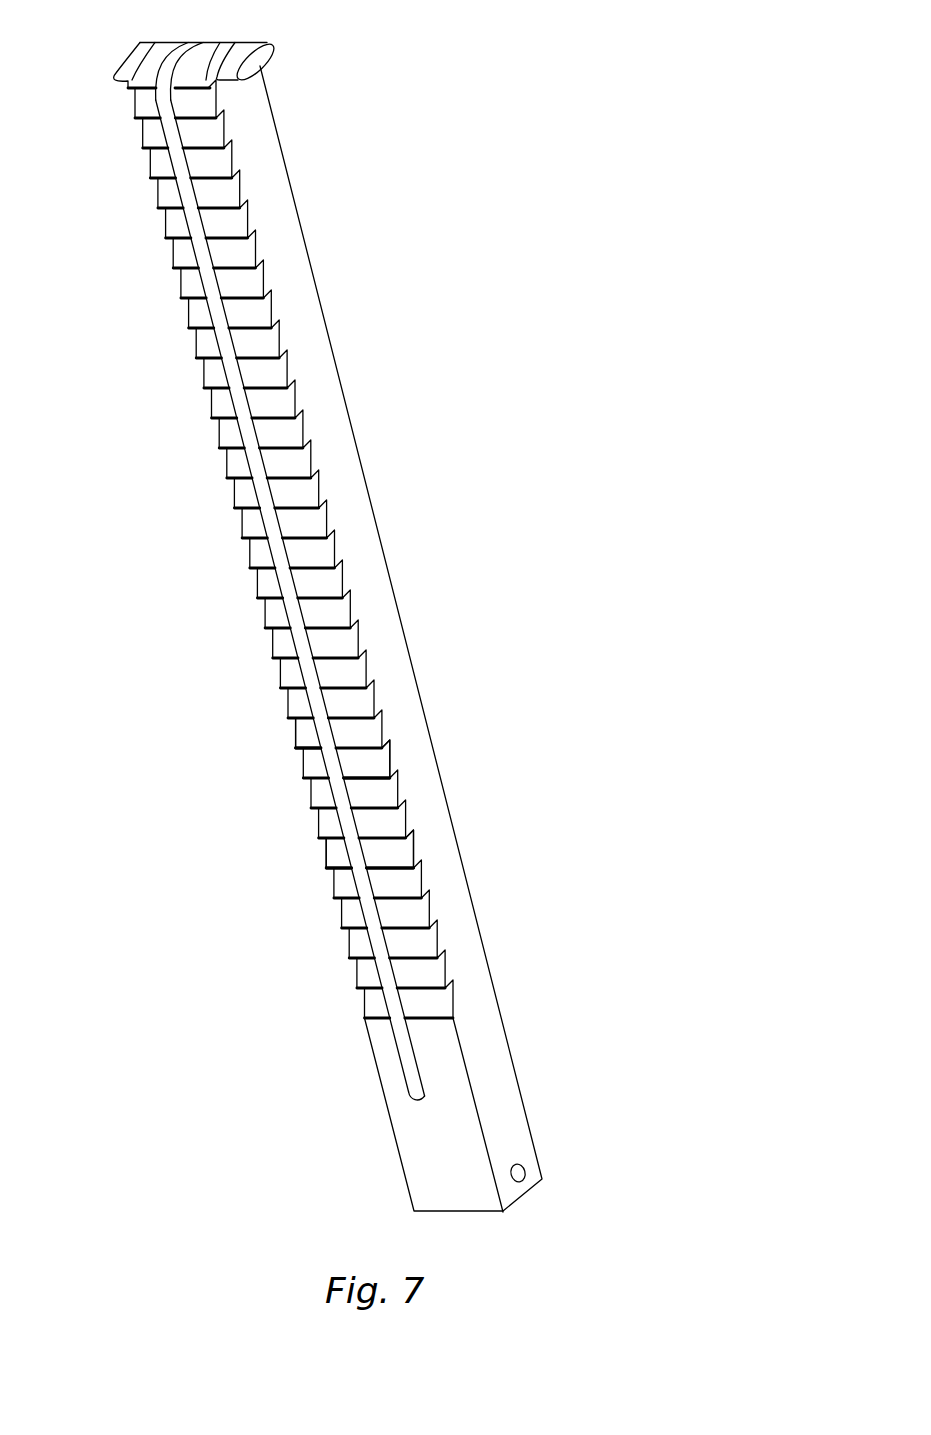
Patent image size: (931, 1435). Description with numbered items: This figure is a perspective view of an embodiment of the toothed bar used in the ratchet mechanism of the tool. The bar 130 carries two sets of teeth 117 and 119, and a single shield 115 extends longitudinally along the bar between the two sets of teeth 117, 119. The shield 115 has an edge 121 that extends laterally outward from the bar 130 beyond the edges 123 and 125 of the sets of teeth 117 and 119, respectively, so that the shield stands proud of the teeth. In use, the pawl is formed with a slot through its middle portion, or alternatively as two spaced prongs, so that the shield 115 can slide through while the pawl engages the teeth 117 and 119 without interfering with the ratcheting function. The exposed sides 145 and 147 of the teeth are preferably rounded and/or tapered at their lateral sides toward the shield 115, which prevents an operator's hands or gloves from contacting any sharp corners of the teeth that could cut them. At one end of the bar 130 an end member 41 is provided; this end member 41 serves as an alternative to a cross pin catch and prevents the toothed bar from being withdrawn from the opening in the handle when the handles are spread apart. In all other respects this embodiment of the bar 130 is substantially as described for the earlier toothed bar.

The bar 130 is at (464, 476).
The end member 41 is at (243, 50).
The edge 121 is at (330, 690).
The shield 115 is at (407, 1055).
The exposed side 145 is at (240, 523).
The exposed side 147 is at (343, 557).
The edge 123 is at (308, 750).
The edge 125 is at (378, 776).
The set of teeth 117 is at (341, 858).
The set of teeth 119 is at (407, 878).